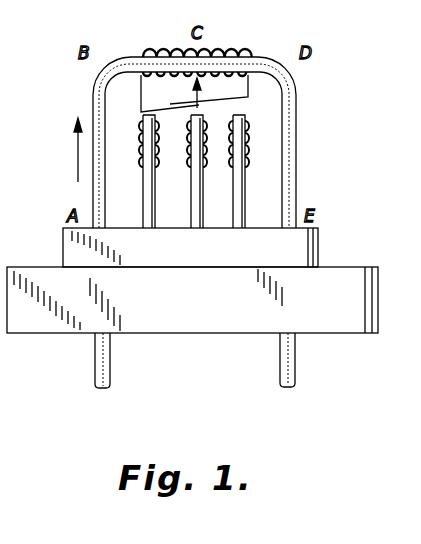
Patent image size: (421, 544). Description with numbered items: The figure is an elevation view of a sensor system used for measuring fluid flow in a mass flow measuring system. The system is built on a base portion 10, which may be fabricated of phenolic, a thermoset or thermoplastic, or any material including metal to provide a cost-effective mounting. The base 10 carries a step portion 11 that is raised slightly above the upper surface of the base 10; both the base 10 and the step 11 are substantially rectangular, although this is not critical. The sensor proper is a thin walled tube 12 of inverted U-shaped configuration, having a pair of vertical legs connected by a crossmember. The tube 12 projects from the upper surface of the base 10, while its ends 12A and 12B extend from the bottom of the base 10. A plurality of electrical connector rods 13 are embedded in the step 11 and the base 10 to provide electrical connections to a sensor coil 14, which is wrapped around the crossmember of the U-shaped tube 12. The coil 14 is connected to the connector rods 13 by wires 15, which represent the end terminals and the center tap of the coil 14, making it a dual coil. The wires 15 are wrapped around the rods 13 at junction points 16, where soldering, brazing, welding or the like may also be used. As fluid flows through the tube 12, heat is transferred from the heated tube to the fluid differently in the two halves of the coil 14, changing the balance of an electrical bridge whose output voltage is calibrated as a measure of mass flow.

The base portion 10 is at (327, 320).
The step portion 11 is at (309, 250).
The thin walled tube 12 is at (294, 162).
The tube end 12A is at (93, 354).
The tube end 12B is at (280, 361).
The electrical connector rods 13 is at (167, 198).
The sensor coil 14 is at (229, 56).
The wires 15 is at (194, 93).
The junction points 16 is at (232, 141).